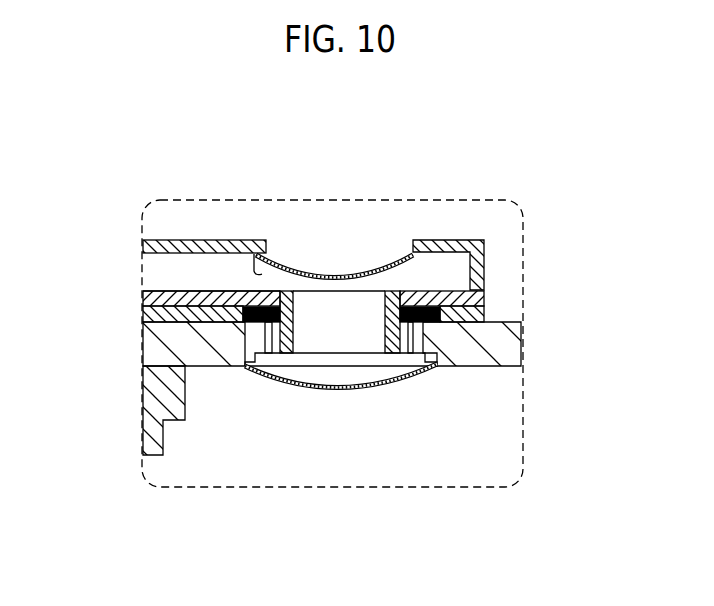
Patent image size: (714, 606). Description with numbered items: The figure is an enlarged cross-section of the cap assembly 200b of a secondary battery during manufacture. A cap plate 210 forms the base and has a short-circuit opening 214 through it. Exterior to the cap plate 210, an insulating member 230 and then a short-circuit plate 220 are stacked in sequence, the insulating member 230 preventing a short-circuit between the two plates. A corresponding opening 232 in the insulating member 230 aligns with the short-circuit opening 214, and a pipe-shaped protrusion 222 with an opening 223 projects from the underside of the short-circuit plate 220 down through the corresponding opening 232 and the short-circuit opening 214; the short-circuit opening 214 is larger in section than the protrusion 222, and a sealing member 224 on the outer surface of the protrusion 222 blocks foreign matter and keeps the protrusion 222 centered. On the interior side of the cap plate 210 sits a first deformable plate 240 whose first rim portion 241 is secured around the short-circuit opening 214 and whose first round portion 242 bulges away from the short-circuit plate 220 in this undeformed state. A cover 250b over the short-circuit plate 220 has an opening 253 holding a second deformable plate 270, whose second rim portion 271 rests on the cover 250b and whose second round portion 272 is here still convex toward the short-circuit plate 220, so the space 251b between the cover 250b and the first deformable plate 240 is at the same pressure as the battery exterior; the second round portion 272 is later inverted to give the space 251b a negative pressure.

The cap assembly 200b is at (468, 194).
The cap plate 210 is at (130, 347).
The short-circuit opening 214 is at (265, 330).
The short-circuit plate 220 is at (130, 297).
The protrusion 222 is at (440, 240).
The opening 223 is at (294, 325).
The sealing member 224 is at (249, 291).
The insulating member 230 is at (130, 315).
The corresponding opening 232 is at (243, 318).
The first deformable plate 240 is at (355, 465).
The first rim portion 241 is at (427, 366).
The first round portion 242 is at (362, 389).
The cover 250b is at (180, 232).
The space 251b is at (255, 240).
The opening 253 is at (389, 288).
The second deformable plate 270 is at (334, 185).
The second rim portion 271 is at (276, 270).
The second round portion 272 is at (331, 272).